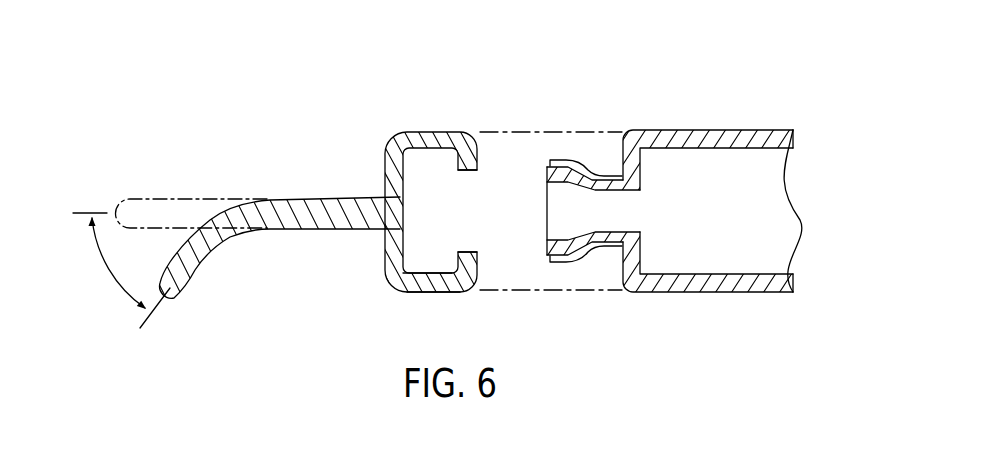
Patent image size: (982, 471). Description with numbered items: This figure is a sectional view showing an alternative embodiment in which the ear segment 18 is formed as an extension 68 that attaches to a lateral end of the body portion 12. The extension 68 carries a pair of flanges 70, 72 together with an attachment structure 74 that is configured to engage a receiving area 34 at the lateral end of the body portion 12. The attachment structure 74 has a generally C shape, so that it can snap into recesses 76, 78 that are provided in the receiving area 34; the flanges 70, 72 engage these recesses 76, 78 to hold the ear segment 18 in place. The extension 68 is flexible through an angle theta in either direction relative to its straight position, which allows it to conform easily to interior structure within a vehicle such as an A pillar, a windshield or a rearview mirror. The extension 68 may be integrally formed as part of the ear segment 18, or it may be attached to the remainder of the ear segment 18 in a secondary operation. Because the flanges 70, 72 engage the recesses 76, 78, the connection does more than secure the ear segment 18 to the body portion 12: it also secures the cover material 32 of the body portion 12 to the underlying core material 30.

The body portion 12 is at (709, 82).
The ear segment 18 is at (196, 116).
The core material 30 is at (788, 142).
The cover material 32 is at (758, 130).
The receiving area 34 is at (597, 105).
The extension 68 is at (320, 206).
The flange 70 is at (437, 137).
The flange 72 is at (425, 284).
The attachment structure 74 is at (466, 171).
The recess 76 is at (604, 170).
The recess 78 is at (597, 252).